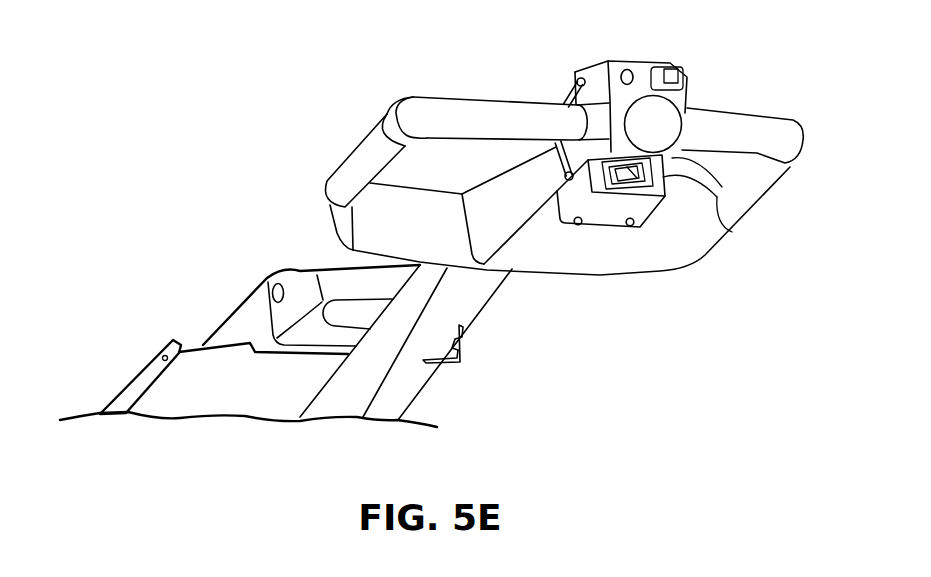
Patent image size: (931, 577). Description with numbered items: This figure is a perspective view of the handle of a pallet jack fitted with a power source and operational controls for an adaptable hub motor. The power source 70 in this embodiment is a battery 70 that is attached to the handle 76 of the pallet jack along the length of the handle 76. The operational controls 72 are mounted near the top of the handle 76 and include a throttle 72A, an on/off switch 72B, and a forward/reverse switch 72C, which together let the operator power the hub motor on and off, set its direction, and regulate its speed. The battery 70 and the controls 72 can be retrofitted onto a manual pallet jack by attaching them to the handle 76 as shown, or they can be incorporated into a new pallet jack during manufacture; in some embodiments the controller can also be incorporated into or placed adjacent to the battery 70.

The power source 70 is at (243, 323).
The operational controls 72 is at (441, 78).
The throttle 72A is at (723, 177).
The on/off switch 72B is at (673, 66).
The forward/reverse switch 72C is at (622, 187).
The handle 76 is at (477, 288).